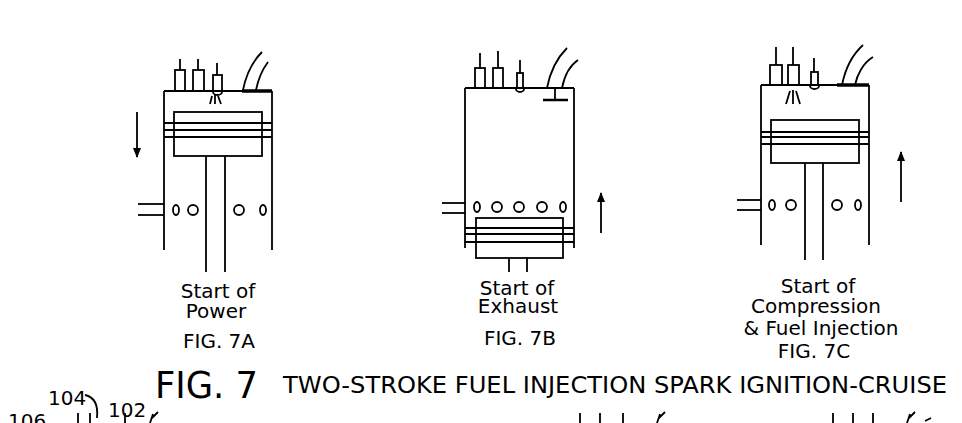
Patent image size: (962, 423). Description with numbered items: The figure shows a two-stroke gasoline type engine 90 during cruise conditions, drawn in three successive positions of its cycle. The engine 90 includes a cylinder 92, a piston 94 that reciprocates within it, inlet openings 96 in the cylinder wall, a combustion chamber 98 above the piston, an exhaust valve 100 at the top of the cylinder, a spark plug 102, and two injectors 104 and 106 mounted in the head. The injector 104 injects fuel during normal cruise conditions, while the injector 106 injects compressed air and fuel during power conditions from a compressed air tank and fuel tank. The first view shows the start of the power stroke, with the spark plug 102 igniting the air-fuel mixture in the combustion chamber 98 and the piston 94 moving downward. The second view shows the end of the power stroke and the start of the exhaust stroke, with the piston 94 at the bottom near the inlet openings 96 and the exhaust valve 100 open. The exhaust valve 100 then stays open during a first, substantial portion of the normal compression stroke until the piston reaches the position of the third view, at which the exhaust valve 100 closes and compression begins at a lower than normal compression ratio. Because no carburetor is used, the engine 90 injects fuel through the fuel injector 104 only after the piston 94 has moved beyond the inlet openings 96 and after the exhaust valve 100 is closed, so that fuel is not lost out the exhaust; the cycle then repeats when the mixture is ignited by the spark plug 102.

The engine 90 is at (95, 95).
The cylinder 92 is at (265, 171).
The piston 94 is at (257, 145).
The inlet openings 96 is at (262, 208).
The combustion chamber 98 is at (258, 100).
The exhaust valve 100 is at (260, 77).
The spark plug 102 is at (224, 73).
The injector 104 is at (194, 68).
The injector 106 is at (175, 80).